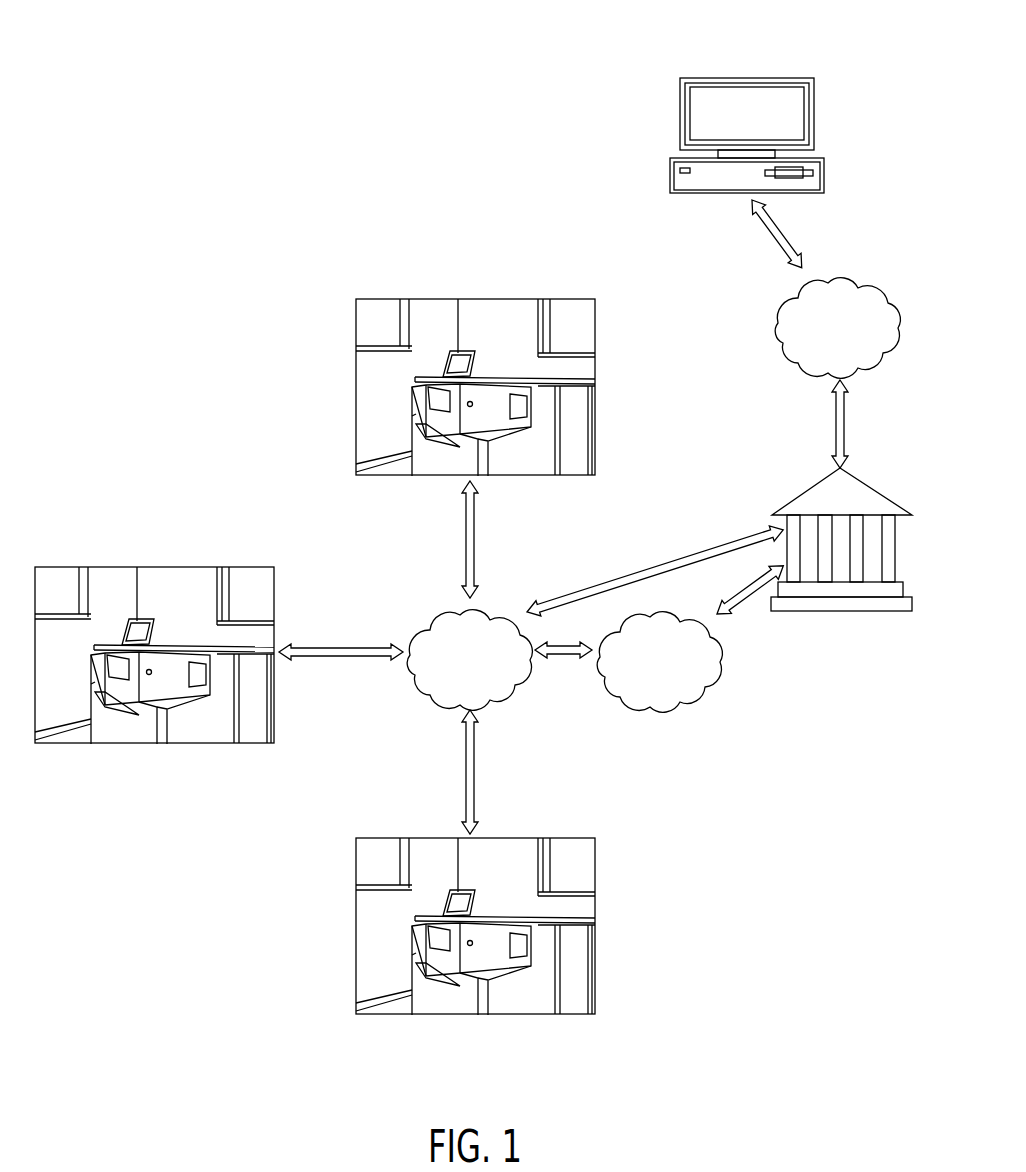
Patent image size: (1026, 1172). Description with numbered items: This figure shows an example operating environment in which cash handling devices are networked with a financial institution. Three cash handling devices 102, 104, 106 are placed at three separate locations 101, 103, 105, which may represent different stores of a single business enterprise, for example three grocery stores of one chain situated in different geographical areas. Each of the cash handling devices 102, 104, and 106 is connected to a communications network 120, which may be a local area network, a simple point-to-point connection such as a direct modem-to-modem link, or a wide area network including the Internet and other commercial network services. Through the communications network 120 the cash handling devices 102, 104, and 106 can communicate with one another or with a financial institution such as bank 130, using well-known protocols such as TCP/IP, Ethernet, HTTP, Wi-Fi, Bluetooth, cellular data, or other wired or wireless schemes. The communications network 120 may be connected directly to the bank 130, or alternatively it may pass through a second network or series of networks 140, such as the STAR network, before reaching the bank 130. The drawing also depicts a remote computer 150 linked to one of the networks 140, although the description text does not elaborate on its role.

The location 101 is at (475, 387).
The cash handling device 102 is at (433, 463).
The location 103 is at (154, 654).
The cash handling device 104 is at (109, 730).
The location 105 is at (443, 955).
The cash handling device 106 is at (437, 1005).
The communications network 120 is at (507, 693).
The bank 130 is at (810, 487).
The series of networks 140 is at (662, 705).
The remote computer 150 is at (783, 78).